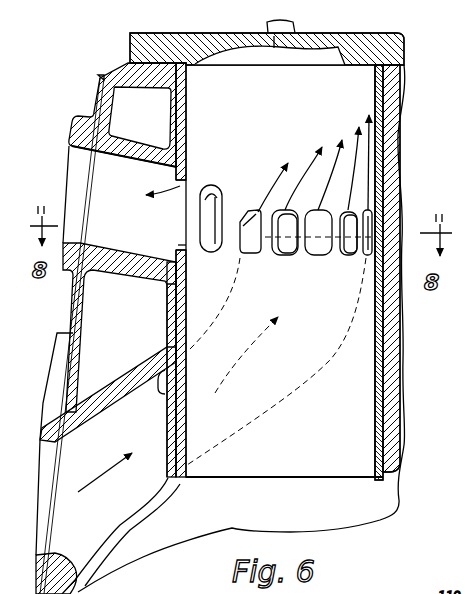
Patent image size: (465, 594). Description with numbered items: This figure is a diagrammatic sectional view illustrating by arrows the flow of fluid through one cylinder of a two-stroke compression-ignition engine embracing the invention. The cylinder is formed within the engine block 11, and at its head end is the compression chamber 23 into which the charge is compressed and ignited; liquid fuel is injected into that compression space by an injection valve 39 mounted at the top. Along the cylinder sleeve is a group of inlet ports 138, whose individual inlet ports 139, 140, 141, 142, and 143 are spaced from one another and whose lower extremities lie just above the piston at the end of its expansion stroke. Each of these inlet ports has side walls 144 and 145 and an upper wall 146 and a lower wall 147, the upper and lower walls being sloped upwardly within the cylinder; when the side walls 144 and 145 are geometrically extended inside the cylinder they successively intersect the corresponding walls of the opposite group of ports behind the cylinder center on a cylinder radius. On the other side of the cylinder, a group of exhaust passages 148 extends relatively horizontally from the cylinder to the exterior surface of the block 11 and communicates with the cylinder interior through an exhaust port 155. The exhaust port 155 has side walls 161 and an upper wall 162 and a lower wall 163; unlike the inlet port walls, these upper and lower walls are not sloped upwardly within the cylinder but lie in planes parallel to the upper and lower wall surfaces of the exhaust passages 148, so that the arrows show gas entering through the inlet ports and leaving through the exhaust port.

The engine block 11 is at (392, 362).
The compression chamber 23 is at (330, 52).
The injection valve 39 is at (273, 36).
The group of inlet ports 138 is at (345, 259).
The inlet port 139 is at (242, 253).
The inlet port 140 is at (280, 256).
The inlet port 141 is at (346, 191).
The inlet port 142 is at (373, 255).
The inlet port 143 is at (375, 215).
The side wall of inlet port 144 is at (323, 197).
The side wall of inlet port 145 is at (273, 250).
The upper wall of inlet port 146 is at (290, 179).
The lower wall of inlet port 147 is at (286, 255).
The group of exhaust passages 148 is at (98, 175).
The exhaust port 155 is at (196, 202).
The side wall of exhaust port 161 is at (217, 208).
The upper wall of exhaust port 162 is at (220, 188).
The lower wall of exhaust port 163 is at (207, 253).